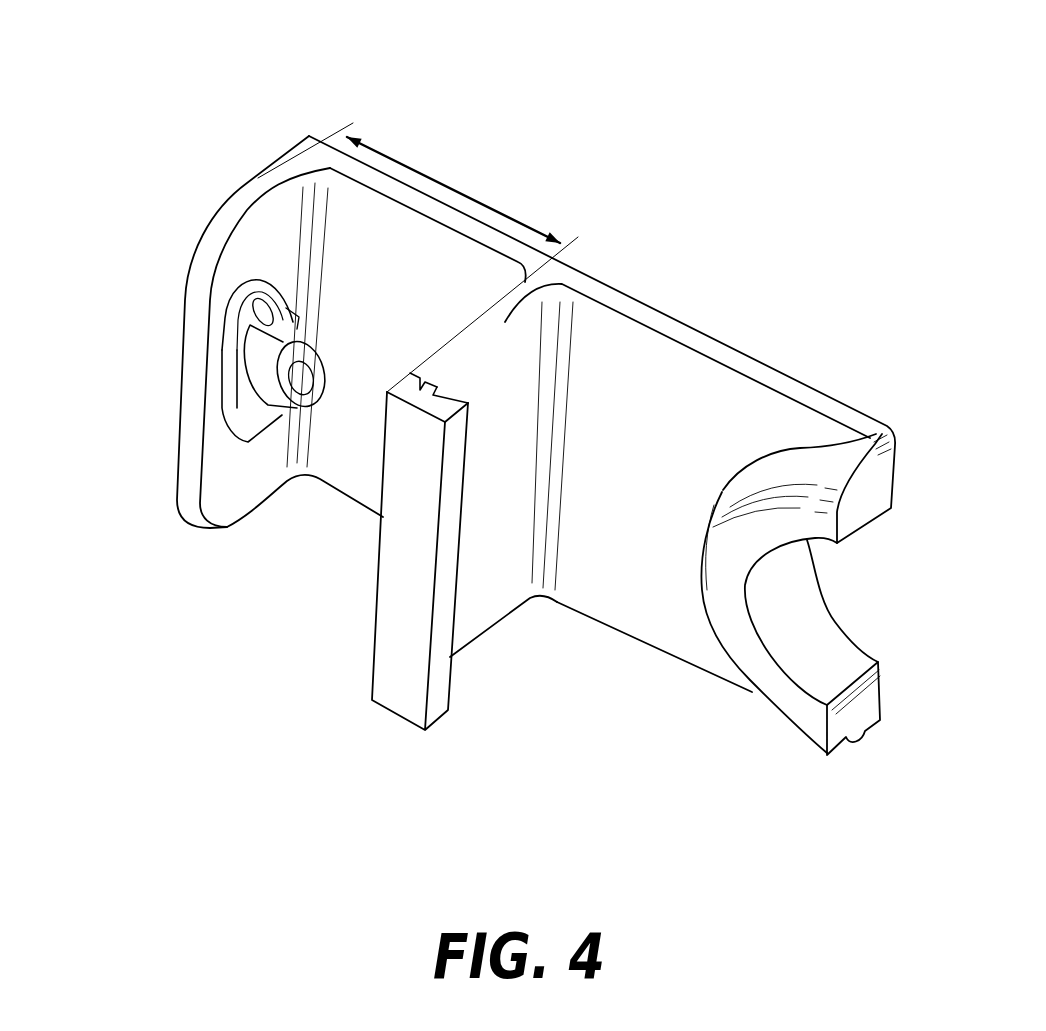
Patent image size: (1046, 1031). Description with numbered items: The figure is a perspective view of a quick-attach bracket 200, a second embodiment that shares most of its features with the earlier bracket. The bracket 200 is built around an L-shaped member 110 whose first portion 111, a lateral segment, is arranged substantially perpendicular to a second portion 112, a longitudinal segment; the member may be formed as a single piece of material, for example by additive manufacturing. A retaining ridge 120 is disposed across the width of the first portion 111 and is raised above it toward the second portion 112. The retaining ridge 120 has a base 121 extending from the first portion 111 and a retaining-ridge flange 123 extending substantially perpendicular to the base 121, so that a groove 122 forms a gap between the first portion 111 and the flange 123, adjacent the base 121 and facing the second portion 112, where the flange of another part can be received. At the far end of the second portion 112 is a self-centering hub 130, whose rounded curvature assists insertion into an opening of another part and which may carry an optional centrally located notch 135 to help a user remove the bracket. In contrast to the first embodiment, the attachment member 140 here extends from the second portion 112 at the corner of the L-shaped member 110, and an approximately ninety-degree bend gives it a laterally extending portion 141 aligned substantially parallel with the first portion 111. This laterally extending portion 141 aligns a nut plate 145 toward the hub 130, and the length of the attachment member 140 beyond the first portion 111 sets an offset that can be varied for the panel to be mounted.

The quick-attach bracket 200 is at (426, 89).
The L-shaped member 110 is at (677, 321).
The first portion 111 is at (507, 568).
The second portion 112 is at (637, 592).
The retaining ridge 120 is at (413, 667).
The base 121 is at (455, 392).
The groove 122 is at (444, 384).
The retaining-ridge flange 123 is at (457, 387).
The self-centering hub 130 is at (773, 687).
The notch 135 is at (833, 564).
The attachment member 140 is at (357, 458).
The laterally extending portion 141 is at (278, 182).
The nut plate 145 is at (224, 395).